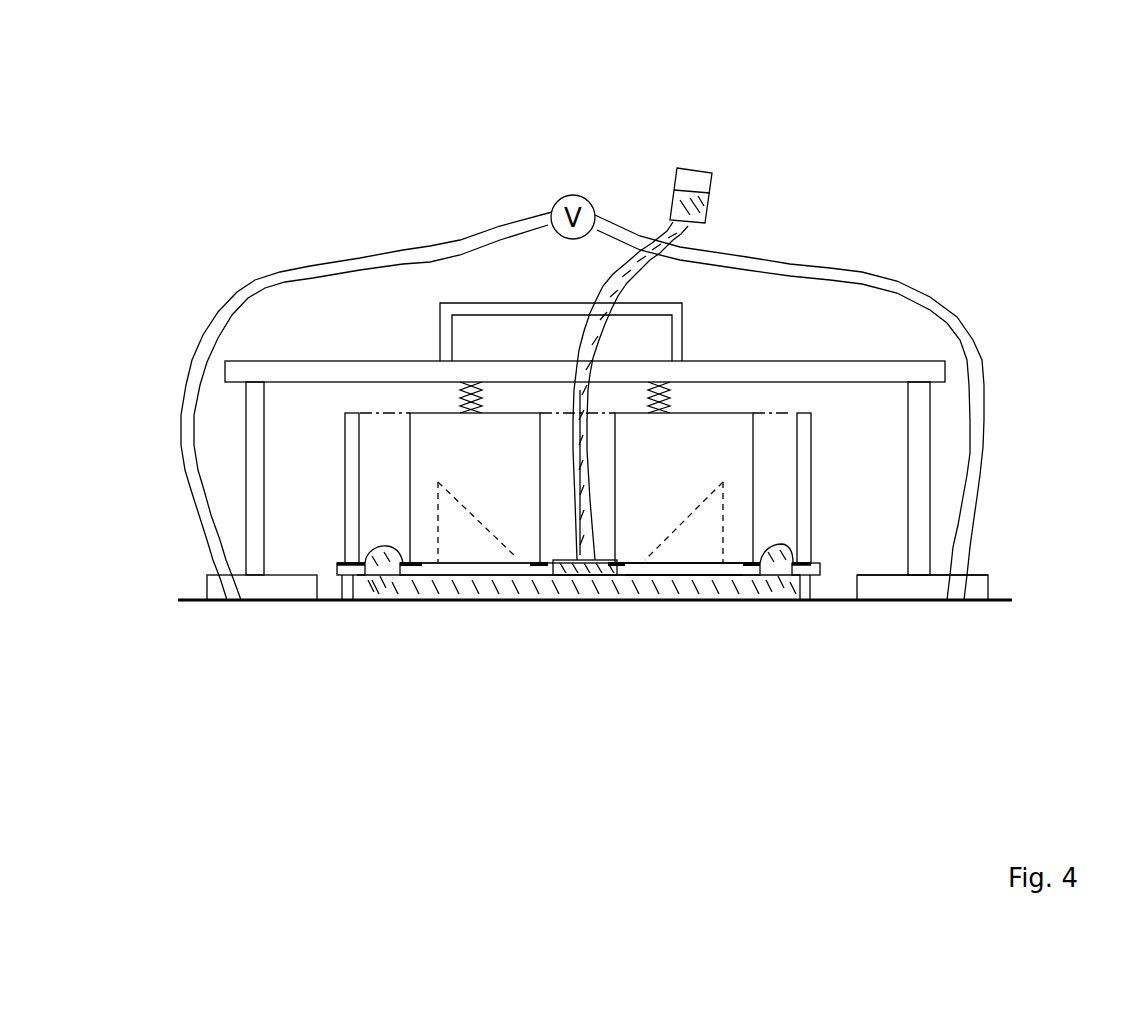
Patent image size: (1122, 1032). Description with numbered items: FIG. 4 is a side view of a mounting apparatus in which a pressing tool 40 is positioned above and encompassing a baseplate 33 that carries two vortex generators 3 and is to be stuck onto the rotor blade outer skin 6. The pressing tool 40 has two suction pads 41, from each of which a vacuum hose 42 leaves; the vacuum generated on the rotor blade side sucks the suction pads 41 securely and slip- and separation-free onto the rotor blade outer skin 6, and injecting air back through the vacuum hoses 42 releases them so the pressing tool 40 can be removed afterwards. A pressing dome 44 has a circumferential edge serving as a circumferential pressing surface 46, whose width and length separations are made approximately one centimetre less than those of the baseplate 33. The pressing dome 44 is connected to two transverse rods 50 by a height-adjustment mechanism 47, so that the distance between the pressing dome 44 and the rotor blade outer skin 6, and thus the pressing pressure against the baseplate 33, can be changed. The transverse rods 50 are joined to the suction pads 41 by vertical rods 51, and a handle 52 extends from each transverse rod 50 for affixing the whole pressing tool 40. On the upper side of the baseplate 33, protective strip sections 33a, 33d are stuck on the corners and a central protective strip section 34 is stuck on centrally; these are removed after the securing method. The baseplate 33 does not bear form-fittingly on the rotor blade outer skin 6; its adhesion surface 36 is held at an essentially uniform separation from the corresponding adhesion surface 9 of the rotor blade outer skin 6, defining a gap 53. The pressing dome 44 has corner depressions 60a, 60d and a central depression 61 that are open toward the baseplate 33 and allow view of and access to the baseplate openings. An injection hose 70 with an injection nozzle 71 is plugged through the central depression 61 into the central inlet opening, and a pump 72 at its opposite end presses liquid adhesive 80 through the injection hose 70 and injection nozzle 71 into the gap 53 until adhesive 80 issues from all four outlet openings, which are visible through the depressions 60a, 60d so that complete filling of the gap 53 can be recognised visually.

The vortex generator 3 is at (437, 528).
The rotor blade outer skin 6 is at (1003, 601).
The corresponding adhesion surface 9 is at (490, 601).
The baseplate 33 is at (675, 570).
The protective strip section 33a is at (405, 567).
The protective strip section 33d is at (753, 601).
The protective strip section 34 is at (622, 570).
The adhesion surface 36 is at (686, 573).
The pressing tool 40 is at (360, 345).
The suction pad 41 is at (902, 601).
The vacuum hose 42 is at (967, 520).
The pressing dome 44 is at (440, 445).
The circumferential pressing surface 46 is at (337, 570).
The height-adjustment mechanism 47 is at (658, 415).
The transverse rod 50 is at (862, 372).
The vertical rod 51 is at (920, 459).
The handle 52 is at (470, 310).
The gap 53 is at (522, 588).
The depression 60a is at (383, 480).
The depression 60d is at (775, 463).
The central depression 61 is at (557, 470).
The injection hose 70 is at (622, 267).
The injection nozzle 71 is at (580, 572).
The pump 72 is at (695, 180).
The liquid adhesive 80 is at (588, 362).